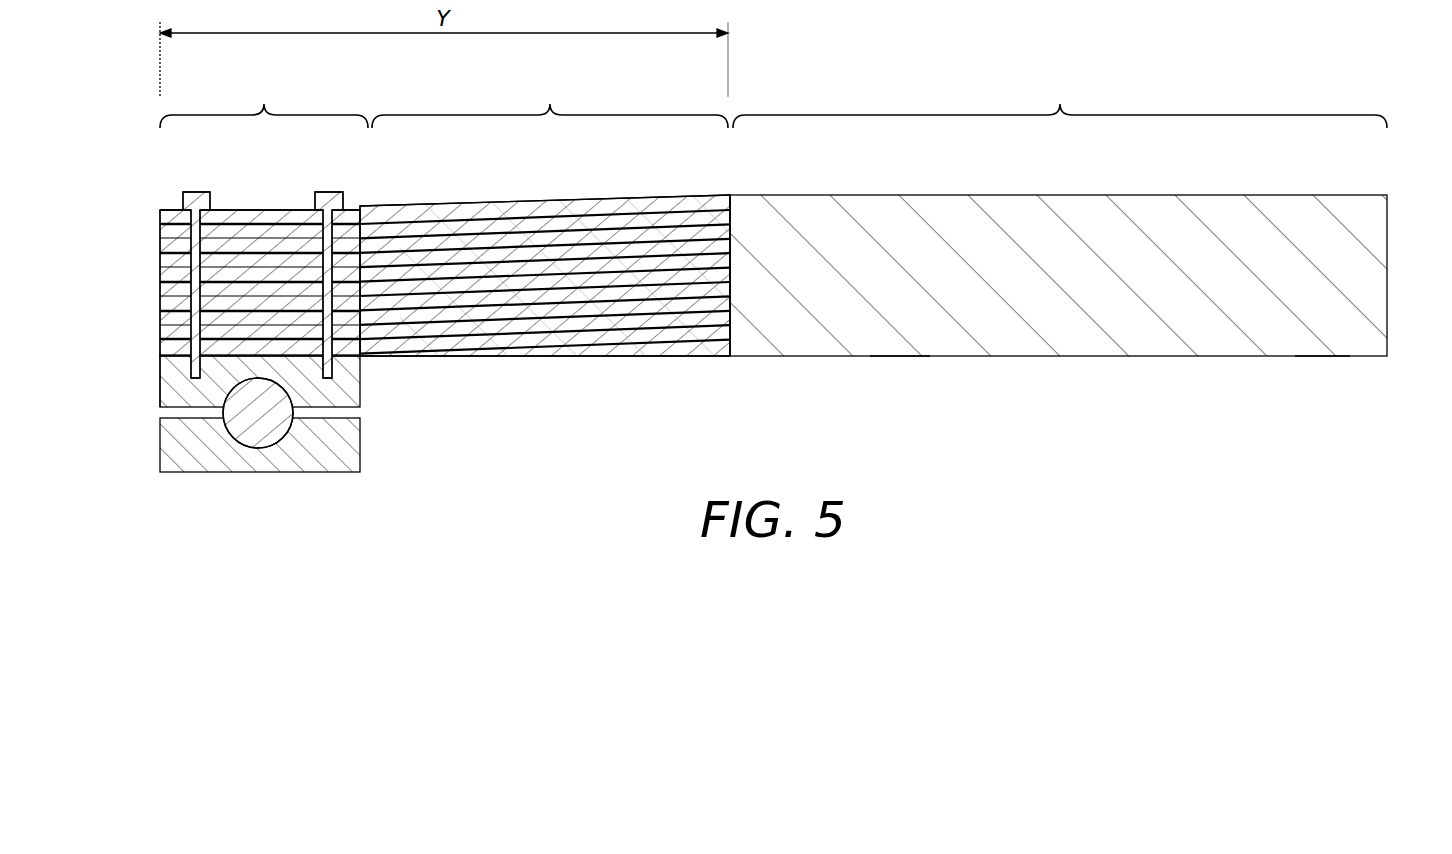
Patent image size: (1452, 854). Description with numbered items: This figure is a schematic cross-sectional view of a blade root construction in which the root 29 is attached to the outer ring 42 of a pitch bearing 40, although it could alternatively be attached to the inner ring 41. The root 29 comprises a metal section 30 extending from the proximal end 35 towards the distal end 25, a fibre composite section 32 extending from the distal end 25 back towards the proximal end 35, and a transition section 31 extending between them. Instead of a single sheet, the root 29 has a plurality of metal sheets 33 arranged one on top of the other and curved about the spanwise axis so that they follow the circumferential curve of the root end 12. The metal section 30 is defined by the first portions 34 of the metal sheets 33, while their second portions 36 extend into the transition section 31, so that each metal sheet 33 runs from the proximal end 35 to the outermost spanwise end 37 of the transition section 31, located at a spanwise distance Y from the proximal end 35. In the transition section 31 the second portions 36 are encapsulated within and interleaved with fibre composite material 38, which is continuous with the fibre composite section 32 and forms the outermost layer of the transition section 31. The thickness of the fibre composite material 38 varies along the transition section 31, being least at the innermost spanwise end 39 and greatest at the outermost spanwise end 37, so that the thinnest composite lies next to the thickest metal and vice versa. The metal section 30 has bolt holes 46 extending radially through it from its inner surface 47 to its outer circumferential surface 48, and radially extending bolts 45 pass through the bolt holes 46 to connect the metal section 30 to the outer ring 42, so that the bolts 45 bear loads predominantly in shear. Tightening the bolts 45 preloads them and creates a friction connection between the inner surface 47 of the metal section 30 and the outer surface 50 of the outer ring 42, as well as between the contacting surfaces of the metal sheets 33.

The root end 12 is at (172, 323).
The distal end 25 is at (1388, 210).
The root 29 is at (1322, 350).
The metal section 30 is at (264, 103).
The transition section 31 is at (550, 103).
The fibre composite section 32 is at (1060, 103).
The metal sheets 33 is at (502, 331).
The first portions 34 is at (172, 233).
The proximal end 35 is at (172, 295).
The second portions 36 is at (603, 341).
The outermost spanwise end 37 is at (730, 357).
The fibre composite material 38 is at (900, 350).
The innermost spanwise end 39 is at (357, 207).
The pitch bearing 40 is at (220, 435).
The inner ring 41 is at (185, 465).
The outer ring 42 is at (338, 398).
The bolts 45 is at (195, 260).
The bolt holes 46 is at (192, 338).
The inner surface 47 is at (267, 343).
The outer circumferential surface 48 is at (259, 210).
The outer surface 50 is at (227, 357).